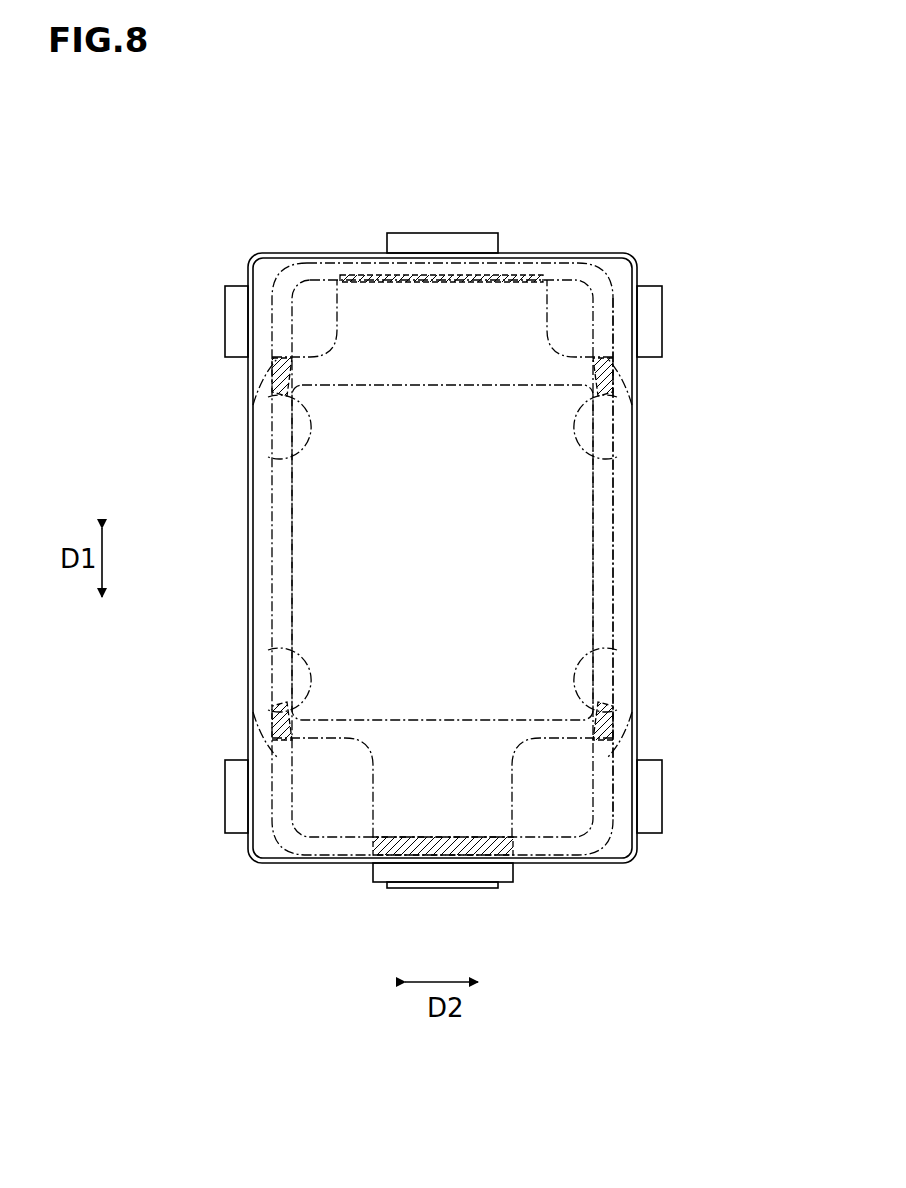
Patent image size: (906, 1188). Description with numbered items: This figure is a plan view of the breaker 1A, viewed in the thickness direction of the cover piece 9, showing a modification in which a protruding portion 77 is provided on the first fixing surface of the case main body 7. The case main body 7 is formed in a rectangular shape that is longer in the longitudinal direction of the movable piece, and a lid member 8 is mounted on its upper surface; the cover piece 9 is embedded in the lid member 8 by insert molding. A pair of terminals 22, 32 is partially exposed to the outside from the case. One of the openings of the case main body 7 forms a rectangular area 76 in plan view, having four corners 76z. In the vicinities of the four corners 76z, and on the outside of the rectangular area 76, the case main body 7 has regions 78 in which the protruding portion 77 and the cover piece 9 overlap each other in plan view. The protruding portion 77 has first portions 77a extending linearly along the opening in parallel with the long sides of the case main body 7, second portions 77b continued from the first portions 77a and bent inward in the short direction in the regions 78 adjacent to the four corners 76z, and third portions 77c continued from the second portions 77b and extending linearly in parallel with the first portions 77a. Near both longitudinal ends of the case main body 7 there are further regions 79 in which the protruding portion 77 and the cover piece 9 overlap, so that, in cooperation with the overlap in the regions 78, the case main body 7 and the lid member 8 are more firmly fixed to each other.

The breaker 1A is at (773, 157).
The case main body 7 is at (632, 862).
The lid member 8 is at (616, 266).
The cover piece 9 is at (468, 868).
The terminal 22 is at (237, 312).
The terminal 32 is at (237, 800).
The rectangular area 76 is at (512, 383).
The four corners 76z is at (280, 458).
The protruding portion 77 is at (450, 544).
The first portions 77a is at (612, 540).
The second portions 77b is at (600, 388).
The third portions 77c is at (612, 296).
The regions 78 is at (276, 372).
The regions 79 is at (431, 275).